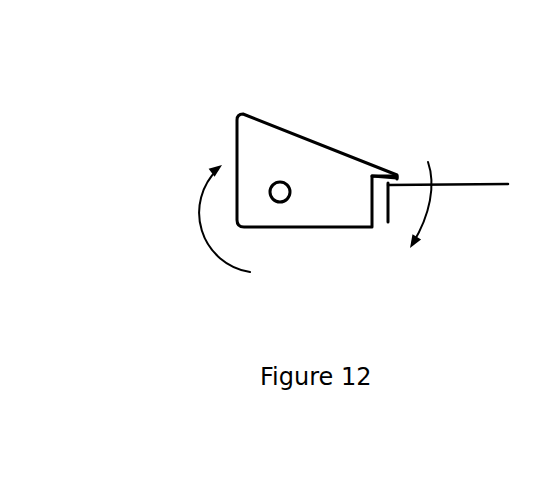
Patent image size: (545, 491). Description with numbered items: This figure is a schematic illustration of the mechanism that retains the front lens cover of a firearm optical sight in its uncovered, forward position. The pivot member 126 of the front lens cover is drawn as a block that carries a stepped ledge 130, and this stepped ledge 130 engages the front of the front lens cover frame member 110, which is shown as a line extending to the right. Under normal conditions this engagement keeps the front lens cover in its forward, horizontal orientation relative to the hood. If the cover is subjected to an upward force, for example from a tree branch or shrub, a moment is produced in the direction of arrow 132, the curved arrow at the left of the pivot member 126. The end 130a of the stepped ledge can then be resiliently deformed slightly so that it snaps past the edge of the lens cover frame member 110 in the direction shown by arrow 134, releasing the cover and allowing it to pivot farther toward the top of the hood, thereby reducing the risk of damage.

The pivot member 126 is at (277, 114).
The stepped ledge 130 is at (380, 192).
The end of the stepped ledge 130a is at (398, 175).
The front lens cover frame member 110 is at (491, 177).
The arrow 132 is at (205, 238).
The arrow 134 is at (432, 182).